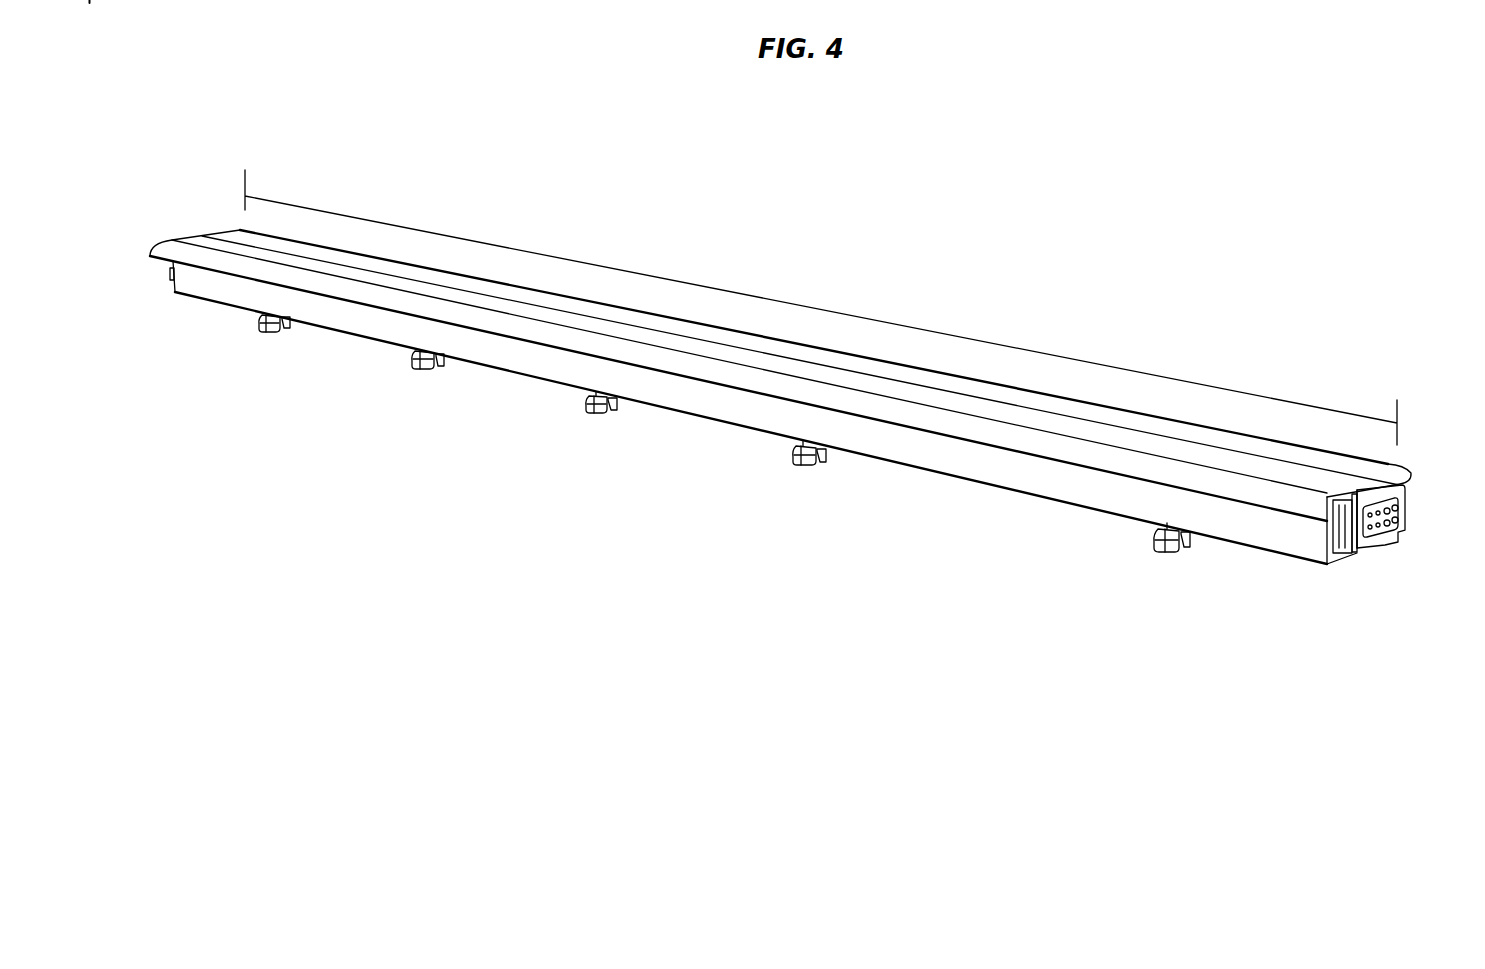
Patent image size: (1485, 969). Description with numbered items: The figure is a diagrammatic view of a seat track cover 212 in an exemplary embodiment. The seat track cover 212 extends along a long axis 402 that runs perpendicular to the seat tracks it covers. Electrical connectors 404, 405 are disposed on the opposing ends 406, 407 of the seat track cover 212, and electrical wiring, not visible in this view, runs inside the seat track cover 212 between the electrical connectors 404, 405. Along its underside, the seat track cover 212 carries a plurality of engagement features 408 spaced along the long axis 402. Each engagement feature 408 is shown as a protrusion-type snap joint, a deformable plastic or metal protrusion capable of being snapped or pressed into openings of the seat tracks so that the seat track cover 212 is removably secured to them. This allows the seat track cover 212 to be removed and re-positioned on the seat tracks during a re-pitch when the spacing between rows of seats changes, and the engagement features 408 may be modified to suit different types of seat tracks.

The seat track cover 212 is at (811, 141).
The long axis 402 is at (762, 297).
The electrical connector 404 is at (170, 270).
The electrical connector 405 is at (1378, 525).
The end 406 is at (190, 211).
The end 407 is at (1427, 547).
The engagement feature 408 is at (262, 329).